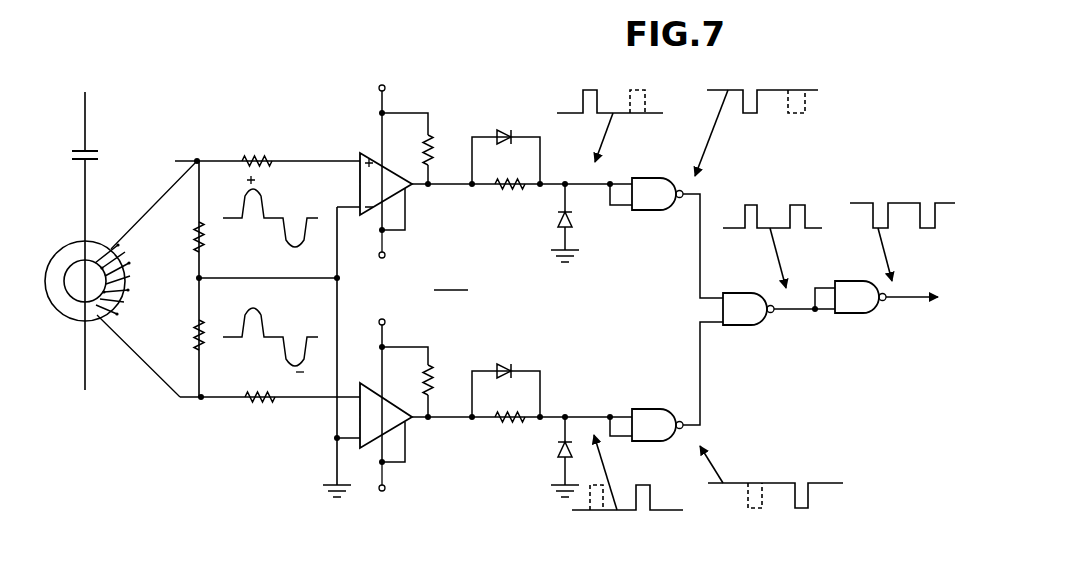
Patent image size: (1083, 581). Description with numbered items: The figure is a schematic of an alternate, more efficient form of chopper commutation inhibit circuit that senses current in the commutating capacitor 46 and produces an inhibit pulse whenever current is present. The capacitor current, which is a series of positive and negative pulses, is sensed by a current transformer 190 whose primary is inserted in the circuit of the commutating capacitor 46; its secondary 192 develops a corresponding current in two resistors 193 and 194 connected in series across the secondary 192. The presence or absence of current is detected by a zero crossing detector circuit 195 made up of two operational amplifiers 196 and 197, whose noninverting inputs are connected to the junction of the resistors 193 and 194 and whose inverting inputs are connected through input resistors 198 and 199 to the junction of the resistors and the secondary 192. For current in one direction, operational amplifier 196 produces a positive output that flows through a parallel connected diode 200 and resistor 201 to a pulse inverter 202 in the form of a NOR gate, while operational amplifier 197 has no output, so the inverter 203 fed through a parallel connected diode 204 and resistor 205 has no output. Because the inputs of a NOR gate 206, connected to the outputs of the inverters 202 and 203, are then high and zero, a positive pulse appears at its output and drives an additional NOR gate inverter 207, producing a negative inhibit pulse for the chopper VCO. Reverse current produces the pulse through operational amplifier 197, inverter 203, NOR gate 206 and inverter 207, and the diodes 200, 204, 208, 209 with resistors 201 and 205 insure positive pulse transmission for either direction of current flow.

The commutating capacitor 46 is at (80, 151).
The current transformer 190 is at (75, 243).
The secondary 192 is at (113, 302).
The resistor 193 is at (195, 228).
The resistor 194 is at (195, 345).
The zero crossing detector circuit 195 is at (453, 278).
The operational amplifier 196 is at (366, 153).
The operational amplifier 197 is at (408, 426).
The input resistor 198 is at (246, 157).
The input resistor 199 is at (250, 401).
The diode 200 is at (503, 134).
The resistor 201 is at (506, 189).
The pulse inverter 202 is at (660, 178).
The inverter 203 is at (661, 409).
The diode 204 is at (503, 366).
The resistor 205 is at (517, 422).
The NOR gate 206 is at (740, 327).
The inverter 207 is at (845, 315).
The diode 208 is at (572, 222).
The diode 209 is at (560, 451).